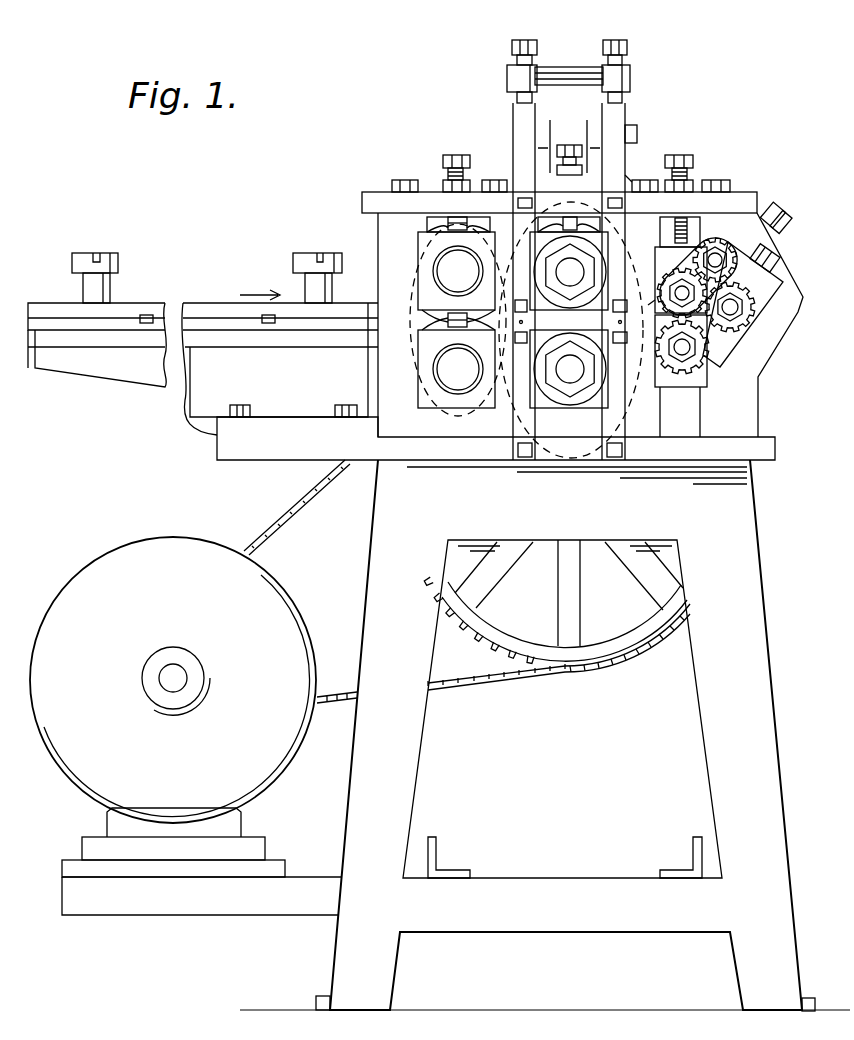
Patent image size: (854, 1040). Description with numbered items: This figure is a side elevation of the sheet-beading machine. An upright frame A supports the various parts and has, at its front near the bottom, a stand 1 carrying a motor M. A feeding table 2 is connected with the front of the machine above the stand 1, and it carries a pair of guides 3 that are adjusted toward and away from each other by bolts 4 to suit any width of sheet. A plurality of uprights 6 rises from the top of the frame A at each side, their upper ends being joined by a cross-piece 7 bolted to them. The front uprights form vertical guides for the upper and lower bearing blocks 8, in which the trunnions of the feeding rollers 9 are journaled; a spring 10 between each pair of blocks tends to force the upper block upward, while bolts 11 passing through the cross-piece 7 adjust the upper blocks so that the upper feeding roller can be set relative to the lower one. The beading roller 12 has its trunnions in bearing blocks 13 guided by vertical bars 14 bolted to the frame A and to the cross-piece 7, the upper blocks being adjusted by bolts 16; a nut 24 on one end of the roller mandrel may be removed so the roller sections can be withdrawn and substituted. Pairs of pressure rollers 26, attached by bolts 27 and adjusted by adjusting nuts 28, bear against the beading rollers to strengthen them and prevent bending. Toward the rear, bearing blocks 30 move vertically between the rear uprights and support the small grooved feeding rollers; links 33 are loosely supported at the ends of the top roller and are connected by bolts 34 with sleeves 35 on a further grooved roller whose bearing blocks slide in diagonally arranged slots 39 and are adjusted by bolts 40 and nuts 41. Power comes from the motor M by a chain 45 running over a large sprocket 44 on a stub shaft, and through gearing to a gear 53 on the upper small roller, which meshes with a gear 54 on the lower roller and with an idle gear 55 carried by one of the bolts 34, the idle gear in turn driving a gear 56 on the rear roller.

The stand 1 is at (280, 912).
The feeding table 2 is at (279, 382).
The guides 3 is at (217, 303).
The bolts 4 is at (103, 260).
The uprights 6 is at (362, 228).
The cross-piece 7 is at (560, 67).
The bearing blocks 8 is at (425, 257).
The feeding rollers 9 is at (447, 222).
The spring 10 is at (447, 318).
The bolts 11 is at (457, 153).
The beading roller 12 is at (626, 243).
The bearing blocks 13 is at (634, 230).
The vertical bars 14 is at (525, 457).
The bolts 16 is at (571, 144).
The nut 24 is at (590, 270).
The pressure rollers 26 is at (628, 175).
The bolts 27 is at (640, 135).
The adjusting nuts 28 is at (622, 43).
The bearing blocks 30 is at (700, 380).
The links 33 is at (702, 277).
The bolts 34 is at (724, 247).
The sleeves 35 is at (762, 292).
The diagonally arranged slots 39 is at (737, 347).
The bolts 40 is at (777, 204).
The nuts 41 is at (793, 222).
The large sprocket 44 is at (635, 640).
The chain 45 is at (480, 683).
The gear 53 is at (660, 303).
The gear 54 is at (682, 372).
The idle gear 55 is at (715, 232).
The gear 56 is at (767, 323).
The upright frame A is at (533, 714).
The motor M is at (185, 726).